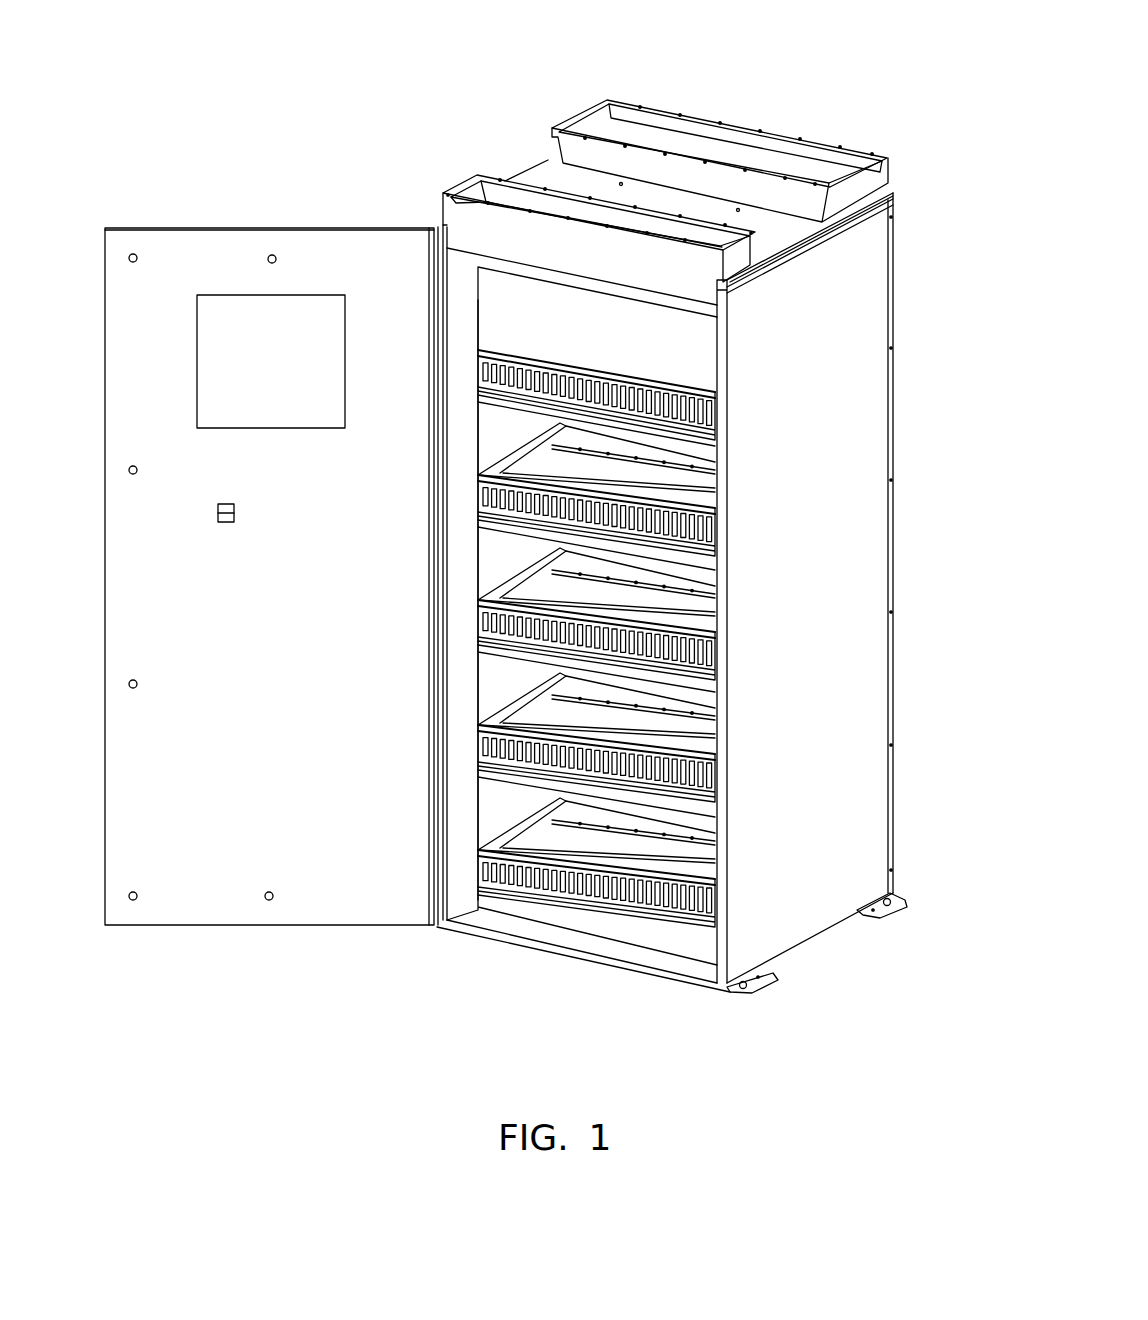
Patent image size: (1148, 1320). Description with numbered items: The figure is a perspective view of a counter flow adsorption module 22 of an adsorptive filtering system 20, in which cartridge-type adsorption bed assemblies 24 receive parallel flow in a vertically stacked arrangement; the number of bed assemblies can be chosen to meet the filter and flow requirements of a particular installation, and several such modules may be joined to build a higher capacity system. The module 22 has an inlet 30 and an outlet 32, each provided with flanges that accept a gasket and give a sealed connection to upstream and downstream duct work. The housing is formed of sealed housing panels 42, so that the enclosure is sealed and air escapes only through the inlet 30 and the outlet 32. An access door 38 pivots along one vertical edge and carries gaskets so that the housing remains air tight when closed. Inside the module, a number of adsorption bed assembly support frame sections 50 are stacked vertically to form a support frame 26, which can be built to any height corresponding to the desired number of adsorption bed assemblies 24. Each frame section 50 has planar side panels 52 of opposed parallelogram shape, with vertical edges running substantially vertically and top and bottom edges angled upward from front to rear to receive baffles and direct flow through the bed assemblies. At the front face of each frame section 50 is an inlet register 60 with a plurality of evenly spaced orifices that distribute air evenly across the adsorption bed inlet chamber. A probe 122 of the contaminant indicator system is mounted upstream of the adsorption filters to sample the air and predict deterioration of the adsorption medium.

The adsorptive filtering system 20 is at (713, 88).
The counter flow adsorption module 22 is at (897, 270).
The adsorption bed assembly 24 is at (684, 350).
The adsorption bed assembly support frame 26 is at (777, 990).
The inlet 30 is at (487, 198).
The outlet 32 is at (733, 153).
The access door 38 is at (196, 258).
The sealed housing panels 42 is at (765, 237).
The adsorption bed assembly support frame section 50 is at (478, 437).
The planar side panels 52 is at (490, 441).
The inlet register 60 is at (692, 416).
The probe 122 is at (222, 524).